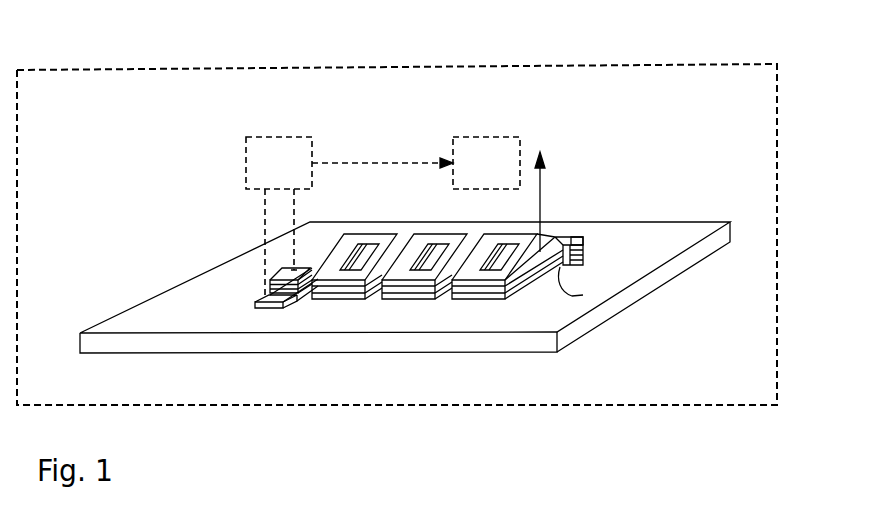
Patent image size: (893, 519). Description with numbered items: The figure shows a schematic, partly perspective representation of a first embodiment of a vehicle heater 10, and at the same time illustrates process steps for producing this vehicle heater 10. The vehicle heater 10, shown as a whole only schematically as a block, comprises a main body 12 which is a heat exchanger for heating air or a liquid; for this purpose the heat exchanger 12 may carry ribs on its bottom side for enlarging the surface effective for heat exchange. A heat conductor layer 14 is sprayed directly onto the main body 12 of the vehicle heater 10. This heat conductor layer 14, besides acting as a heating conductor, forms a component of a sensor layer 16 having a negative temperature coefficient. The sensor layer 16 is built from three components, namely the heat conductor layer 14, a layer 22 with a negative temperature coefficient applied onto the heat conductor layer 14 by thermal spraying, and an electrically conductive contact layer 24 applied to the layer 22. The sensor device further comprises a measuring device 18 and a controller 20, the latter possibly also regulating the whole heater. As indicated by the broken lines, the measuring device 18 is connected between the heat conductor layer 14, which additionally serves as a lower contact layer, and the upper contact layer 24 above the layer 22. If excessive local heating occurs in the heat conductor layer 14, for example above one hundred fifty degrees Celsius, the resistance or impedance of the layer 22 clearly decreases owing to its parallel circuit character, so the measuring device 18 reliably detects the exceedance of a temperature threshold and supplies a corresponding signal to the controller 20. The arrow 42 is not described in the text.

The vehicle heater 10 is at (107, 70).
The main body 12 is at (645, 286).
The heat conductor layer 14 is at (583, 253).
The sensor layer 16 is at (585, 248).
The measuring device 18 is at (279, 217).
The controller 20 is at (416, 163).
The layer having a negative temperature coefficient 22 is at (578, 273).
The contact layer 24 is at (583, 295).
The measurement direction arrow 42 is at (540, 205).